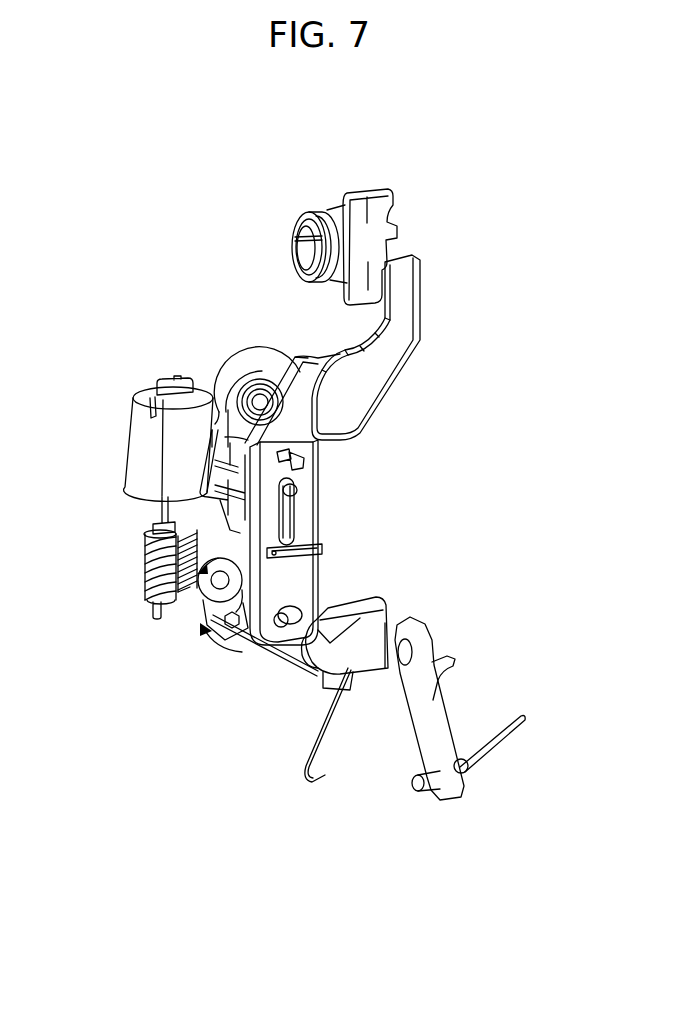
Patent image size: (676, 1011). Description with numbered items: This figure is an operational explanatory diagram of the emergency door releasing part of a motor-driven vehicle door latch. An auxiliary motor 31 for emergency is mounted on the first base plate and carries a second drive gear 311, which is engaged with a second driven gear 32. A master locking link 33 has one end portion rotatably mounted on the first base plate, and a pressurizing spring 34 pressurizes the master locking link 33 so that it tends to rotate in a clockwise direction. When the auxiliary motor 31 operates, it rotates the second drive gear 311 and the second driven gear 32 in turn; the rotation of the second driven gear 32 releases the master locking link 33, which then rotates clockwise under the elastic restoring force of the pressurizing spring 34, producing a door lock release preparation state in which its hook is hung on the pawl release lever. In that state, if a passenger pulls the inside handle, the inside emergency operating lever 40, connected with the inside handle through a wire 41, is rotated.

The auxiliary motor 31 is at (137, 434).
The second drive gear 311 is at (145, 553).
The second driven gear 32 is at (197, 600).
The master locking link 33 is at (275, 664).
The pressurizing spring 34 is at (306, 782).
The inside emergency operating lever 40 is at (448, 787).
The wire 41 is at (502, 742).